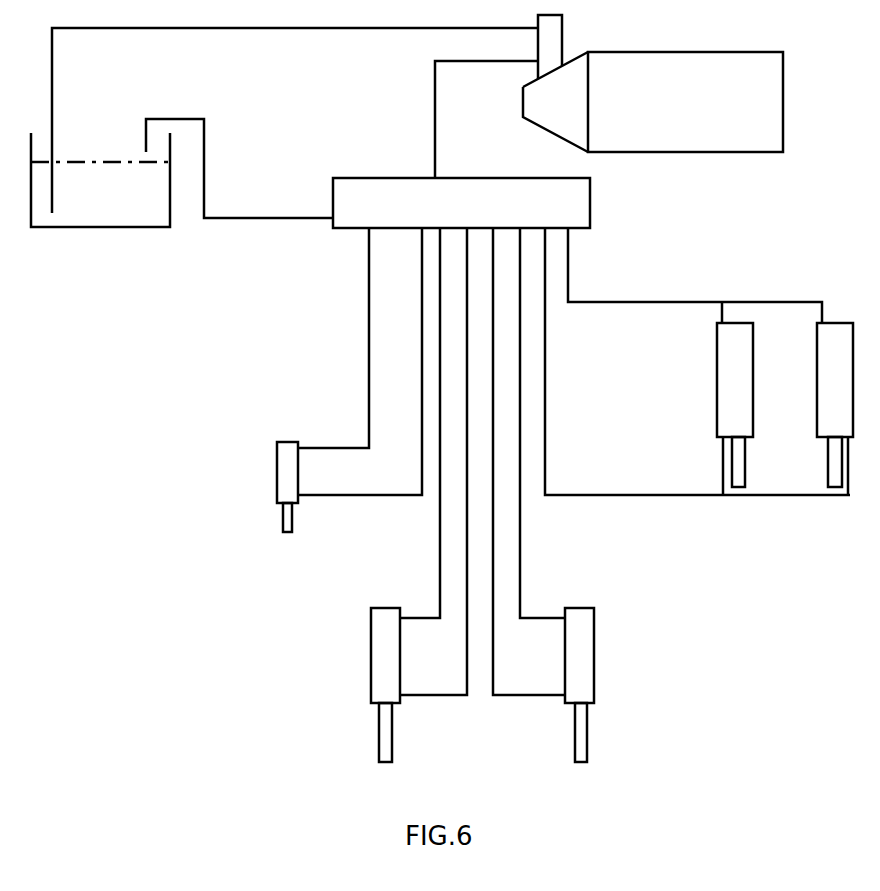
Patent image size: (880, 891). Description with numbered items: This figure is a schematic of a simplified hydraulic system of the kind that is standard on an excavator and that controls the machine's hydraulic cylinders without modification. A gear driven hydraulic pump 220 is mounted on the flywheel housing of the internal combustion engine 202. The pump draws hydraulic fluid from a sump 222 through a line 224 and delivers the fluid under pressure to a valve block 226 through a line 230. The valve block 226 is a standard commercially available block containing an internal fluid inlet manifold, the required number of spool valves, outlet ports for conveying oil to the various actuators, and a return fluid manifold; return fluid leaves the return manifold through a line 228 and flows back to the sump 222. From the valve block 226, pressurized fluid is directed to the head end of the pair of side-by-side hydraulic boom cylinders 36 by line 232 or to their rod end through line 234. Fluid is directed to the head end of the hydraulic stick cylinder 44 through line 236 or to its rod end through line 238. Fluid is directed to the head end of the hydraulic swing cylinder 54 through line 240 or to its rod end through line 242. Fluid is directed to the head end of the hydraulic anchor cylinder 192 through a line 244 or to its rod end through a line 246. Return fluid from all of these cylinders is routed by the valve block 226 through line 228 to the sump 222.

The hydraulic boom cylinders 36 is at (807, 385).
The hydraulic stick cylinder 44 is at (594, 645).
The hydraulic swing cylinder 54 is at (371, 650).
The hydraulic anchor cylinder 192 is at (277, 478).
The ionized air blower 202 is at (687, 115).
The gear driven hydraulic pump 220 is at (553, 39).
The sump 222 is at (171, 213).
The line 224 is at (195, 28).
The valve block 226 is at (375, 185).
The line 228 is at (267, 218).
The line 230 is at (435, 93).
The line 232 is at (568, 267).
The line 234 is at (545, 433).
The line 236 is at (535, 613).
The line 238 is at (525, 695).
The line 240 is at (423, 613).
The line 242 is at (435, 695).
The line 244 is at (369, 345).
The line 246 is at (335, 495).